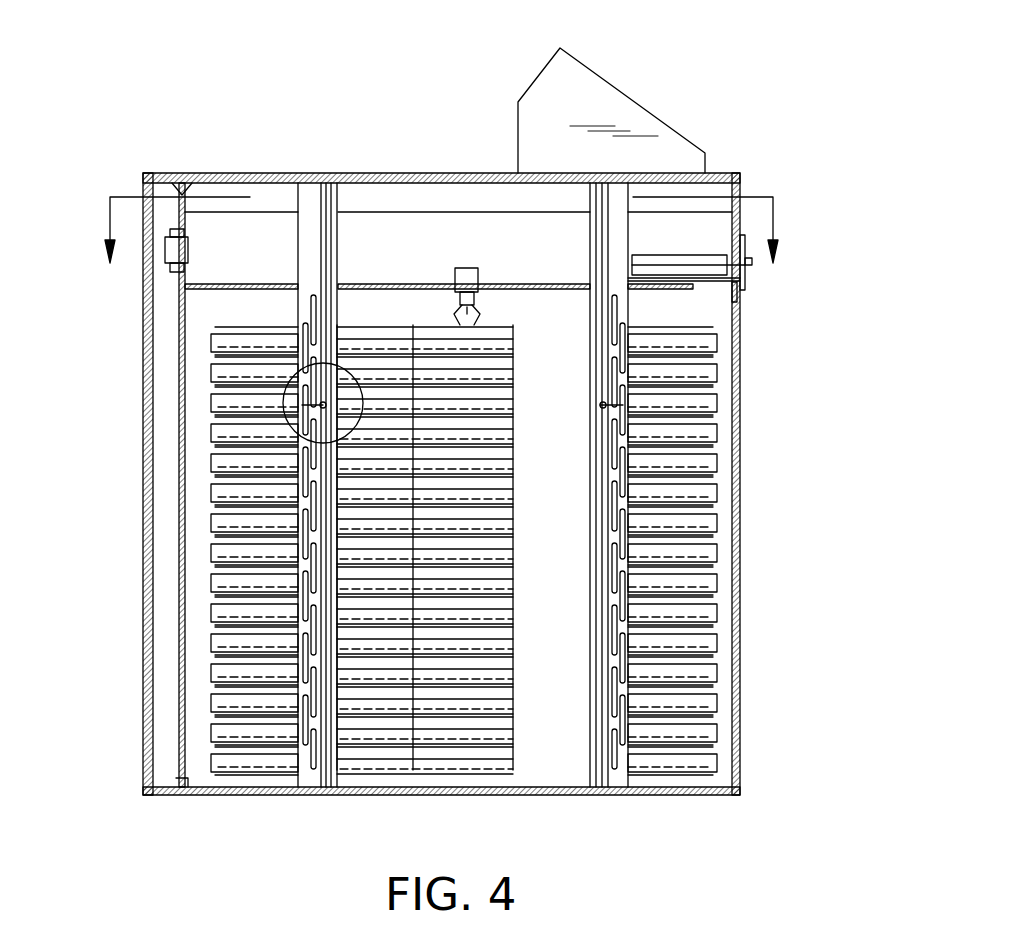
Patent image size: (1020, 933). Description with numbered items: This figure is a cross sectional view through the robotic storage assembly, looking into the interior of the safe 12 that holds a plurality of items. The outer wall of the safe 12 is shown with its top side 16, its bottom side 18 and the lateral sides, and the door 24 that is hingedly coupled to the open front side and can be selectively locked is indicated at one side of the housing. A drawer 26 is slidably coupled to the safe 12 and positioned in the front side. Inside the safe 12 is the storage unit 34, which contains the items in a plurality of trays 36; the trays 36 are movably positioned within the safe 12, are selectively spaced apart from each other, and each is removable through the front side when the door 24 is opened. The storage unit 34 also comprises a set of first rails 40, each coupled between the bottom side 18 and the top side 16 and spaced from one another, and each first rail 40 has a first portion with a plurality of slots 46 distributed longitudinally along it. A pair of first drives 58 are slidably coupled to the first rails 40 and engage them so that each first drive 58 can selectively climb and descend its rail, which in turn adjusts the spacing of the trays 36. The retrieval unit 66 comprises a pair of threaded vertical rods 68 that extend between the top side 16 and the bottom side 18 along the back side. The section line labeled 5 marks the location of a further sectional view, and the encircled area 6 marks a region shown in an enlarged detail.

The section line 5- 5 is at (442, 244).
The detail area 6 is at (285, 395).
The safe 12 is at (740, 173).
The top side 16 is at (404, 173).
The bottom side 18 is at (348, 796).
The door 24 is at (745, 650).
The drawer 26 is at (745, 283).
The storage unit 34 is at (542, 550).
The trays 36 is at (717, 611).
The first rails 40 is at (300, 773).
The slots 46 is at (615, 313).
The first drives 58 is at (311, 298).
The retrieval unit 66 is at (197, 254).
The vertical rods 68 is at (182, 600).